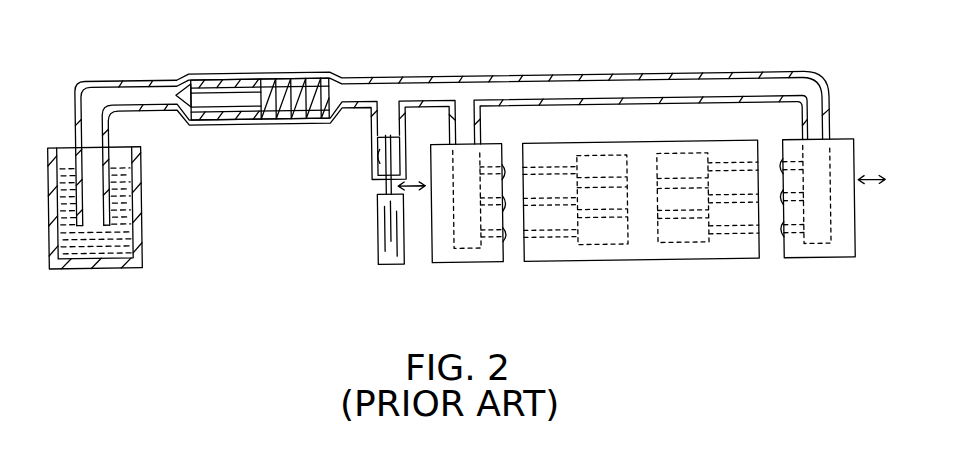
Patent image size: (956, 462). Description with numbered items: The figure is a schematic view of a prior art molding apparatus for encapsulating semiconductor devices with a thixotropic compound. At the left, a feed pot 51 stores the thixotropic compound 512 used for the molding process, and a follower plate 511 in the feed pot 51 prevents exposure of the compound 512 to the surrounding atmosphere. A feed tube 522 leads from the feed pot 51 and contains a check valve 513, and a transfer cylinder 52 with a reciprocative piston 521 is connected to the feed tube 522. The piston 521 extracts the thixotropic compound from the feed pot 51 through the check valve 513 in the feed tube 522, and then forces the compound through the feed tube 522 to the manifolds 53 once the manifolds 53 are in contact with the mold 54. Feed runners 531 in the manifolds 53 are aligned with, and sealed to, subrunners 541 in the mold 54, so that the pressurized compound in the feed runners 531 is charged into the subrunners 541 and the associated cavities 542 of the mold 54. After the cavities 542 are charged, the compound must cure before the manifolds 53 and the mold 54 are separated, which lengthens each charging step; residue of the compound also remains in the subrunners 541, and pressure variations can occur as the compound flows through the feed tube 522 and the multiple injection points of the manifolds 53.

The feed pot 51 is at (84, 263).
The follower plate 511 is at (63, 172).
The thixotropic compound 512 is at (124, 198).
The check valve 513 is at (232, 90).
The transfer cylinder 52 is at (375, 165).
The reciprocative piston 521 is at (382, 132).
The feed tube 522 is at (486, 74).
The manifolds 53 is at (493, 145).
The feed runners 531 is at (488, 250).
The mold 54 is at (622, 145).
The subrunners 541 is at (565, 243).
The cavities 542 is at (628, 248).